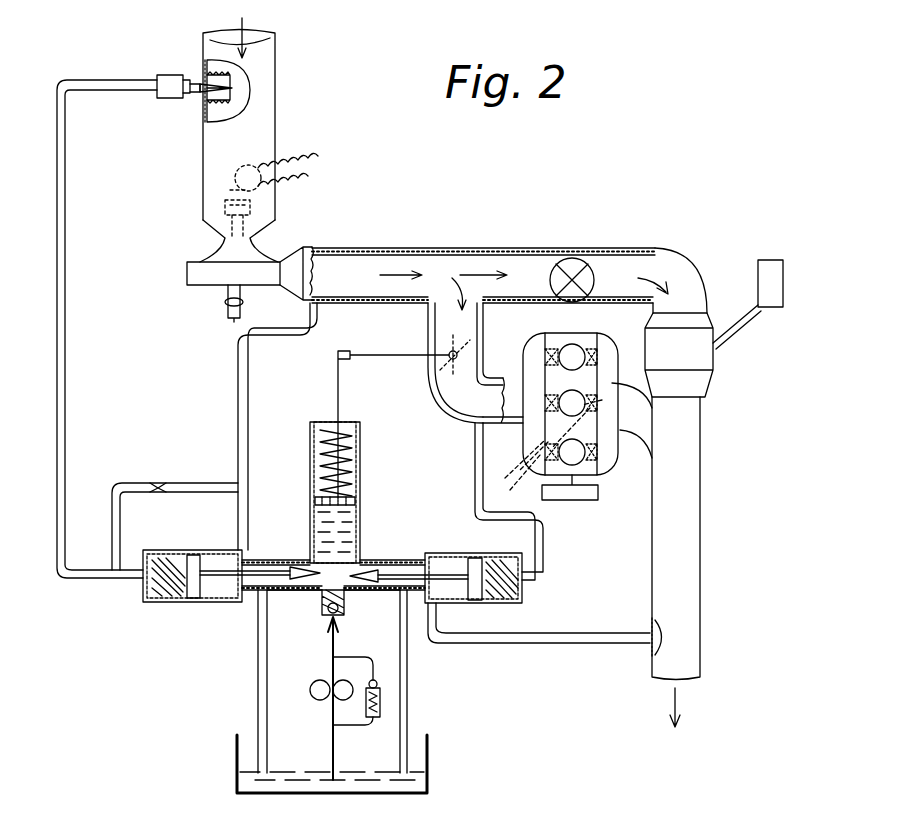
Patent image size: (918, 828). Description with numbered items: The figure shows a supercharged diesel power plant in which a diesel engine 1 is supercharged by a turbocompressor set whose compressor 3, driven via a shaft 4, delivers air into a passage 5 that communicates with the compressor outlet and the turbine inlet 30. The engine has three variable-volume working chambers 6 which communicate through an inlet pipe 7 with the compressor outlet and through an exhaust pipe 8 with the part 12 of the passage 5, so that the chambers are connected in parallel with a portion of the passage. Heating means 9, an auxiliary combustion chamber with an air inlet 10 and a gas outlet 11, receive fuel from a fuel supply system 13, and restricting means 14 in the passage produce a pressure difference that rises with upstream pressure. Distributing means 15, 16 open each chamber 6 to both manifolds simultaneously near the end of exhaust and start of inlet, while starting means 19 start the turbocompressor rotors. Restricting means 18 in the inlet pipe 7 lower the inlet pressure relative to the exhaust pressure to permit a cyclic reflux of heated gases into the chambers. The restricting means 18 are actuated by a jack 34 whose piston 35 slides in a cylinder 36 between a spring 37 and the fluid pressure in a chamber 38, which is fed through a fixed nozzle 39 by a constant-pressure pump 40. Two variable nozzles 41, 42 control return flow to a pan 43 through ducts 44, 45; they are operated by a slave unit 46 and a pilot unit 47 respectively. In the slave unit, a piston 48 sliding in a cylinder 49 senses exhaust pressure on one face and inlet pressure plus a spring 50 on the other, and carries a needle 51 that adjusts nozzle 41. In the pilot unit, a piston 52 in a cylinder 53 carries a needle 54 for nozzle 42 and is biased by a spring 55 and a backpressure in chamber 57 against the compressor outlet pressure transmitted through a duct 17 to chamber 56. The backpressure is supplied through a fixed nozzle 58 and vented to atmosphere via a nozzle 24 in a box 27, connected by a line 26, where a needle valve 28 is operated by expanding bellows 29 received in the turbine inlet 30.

The diesel engine 1 is at (621, 482).
The compressor 3 is at (187, 275).
The shaft 4 is at (228, 312).
The passage 5 is at (640, 250).
The variable-volume working chambers 6 is at (575, 400).
The inlet pipe 7 is at (487, 370).
The exhaust pipe 8 is at (625, 445).
The heating means 9 is at (732, 368).
The air inlet 10 is at (710, 318).
The gas outlet 11 is at (705, 404).
The part of the passage 12 is at (652, 412).
The fuel supply system 13 is at (783, 265).
The restricting means 14 is at (588, 247).
The distributing means 15 is at (554, 416).
The distributing means 16 is at (572, 429).
The duct 17 is at (249, 412).
The restricting means 18 is at (446, 360).
The starting means 19 is at (225, 204).
The nozzle 24 is at (196, 80).
The line 26 is at (66, 340).
The box 27 is at (162, 75).
The needle valve 28 is at (192, 100).
The expanding bellows 29 is at (250, 112).
The turbine inlet 30 is at (268, 78).
The jack 34 is at (380, 530).
The piston 35 is at (357, 500).
The cylinder 36 is at (312, 472).
The spring 37 is at (352, 448).
The chamber 38 is at (318, 522).
The fixed nozzle 39 is at (324, 600).
The constant-pressure pump 40 is at (326, 666).
The variable nozzle 41 is at (366, 576).
The variable nozzle 42 is at (305, 565).
The pan 43 is at (428, 758).
The duct 44 is at (408, 694).
The duct 45 is at (258, 698).
The slave unit 46 is at (465, 540).
The pilot unit 47 is at (185, 618).
The piston 48 is at (475, 600).
The cylinder 49 is at (432, 553).
The spring 50 is at (516, 603).
The needle 51 is at (375, 586).
The piston 52 is at (198, 553).
The cylinder 53 is at (205, 600).
The needle 54 is at (290, 570).
The spring 55 is at (160, 552).
The chamber 56 is at (238, 602).
The chamber 57 is at (166, 600).
The fixed nozzle 58 is at (160, 481).